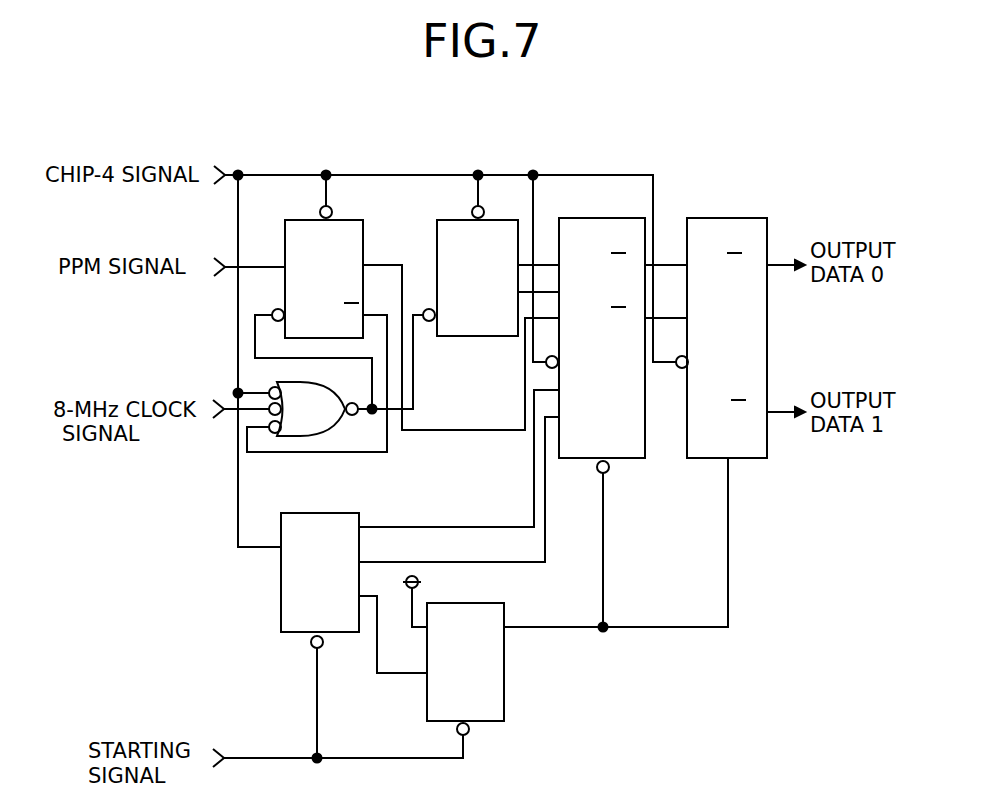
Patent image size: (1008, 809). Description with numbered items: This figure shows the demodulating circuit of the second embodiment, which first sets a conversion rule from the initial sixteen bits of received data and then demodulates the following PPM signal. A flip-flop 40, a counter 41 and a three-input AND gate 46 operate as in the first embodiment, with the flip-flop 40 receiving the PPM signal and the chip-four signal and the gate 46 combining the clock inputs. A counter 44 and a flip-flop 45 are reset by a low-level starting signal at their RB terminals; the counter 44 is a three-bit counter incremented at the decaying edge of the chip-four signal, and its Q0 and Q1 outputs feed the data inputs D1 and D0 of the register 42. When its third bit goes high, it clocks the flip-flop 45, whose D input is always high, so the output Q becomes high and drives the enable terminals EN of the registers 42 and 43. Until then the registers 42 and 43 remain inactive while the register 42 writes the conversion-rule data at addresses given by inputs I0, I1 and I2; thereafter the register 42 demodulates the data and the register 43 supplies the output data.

The flip-flop 40 is at (342, 220).
The counter 41 is at (493, 220).
The register 42 is at (593, 218).
The register 43 is at (728, 218).
The counter 44 is at (345, 513).
The flip-flop 45 is at (504, 614).
The 3-input AND gate 46 is at (290, 437).